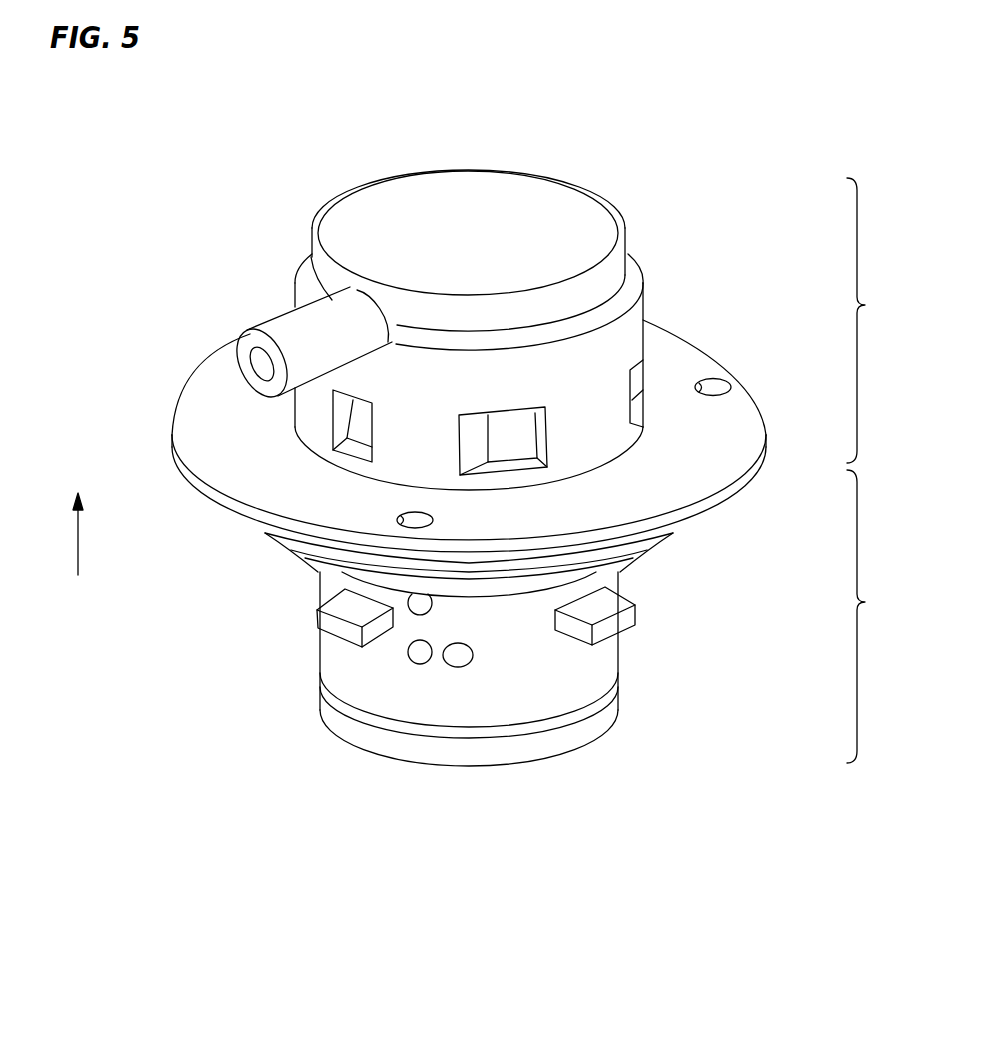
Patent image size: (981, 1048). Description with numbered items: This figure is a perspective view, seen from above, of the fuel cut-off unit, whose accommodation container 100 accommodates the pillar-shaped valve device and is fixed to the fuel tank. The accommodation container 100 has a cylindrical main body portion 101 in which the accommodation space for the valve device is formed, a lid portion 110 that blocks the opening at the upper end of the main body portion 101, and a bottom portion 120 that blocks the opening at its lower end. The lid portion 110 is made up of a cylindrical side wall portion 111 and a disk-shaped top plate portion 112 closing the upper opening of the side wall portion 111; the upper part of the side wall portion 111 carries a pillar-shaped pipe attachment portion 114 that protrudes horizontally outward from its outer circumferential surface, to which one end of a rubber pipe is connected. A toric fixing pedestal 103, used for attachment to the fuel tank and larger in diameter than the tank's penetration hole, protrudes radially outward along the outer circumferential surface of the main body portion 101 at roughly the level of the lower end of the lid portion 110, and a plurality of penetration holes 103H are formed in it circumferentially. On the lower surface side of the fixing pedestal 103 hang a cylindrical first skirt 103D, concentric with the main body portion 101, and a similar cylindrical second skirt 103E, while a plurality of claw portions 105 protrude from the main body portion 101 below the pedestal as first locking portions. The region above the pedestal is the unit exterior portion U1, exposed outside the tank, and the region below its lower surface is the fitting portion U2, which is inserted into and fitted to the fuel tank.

The accommodation container 100 is at (377, 856).
The main body portion 101 is at (620, 663).
The fixing pedestal 103 is at (728, 415).
The first skirt 103D is at (650, 548).
The second skirt 103E is at (630, 567).
The penetration hole 103H is at (713, 392).
The claw portion 105 is at (635, 617).
The lid portion 110 is at (645, 303).
The side wall portion 111 is at (625, 345).
The top plate portion 112 is at (557, 211).
The pipe attachment portion 114 is at (277, 328).
The bottom portion 120 is at (485, 766).
The unit exterior portion U1 is at (872, 320).
The fitting portion U2 is at (872, 616).